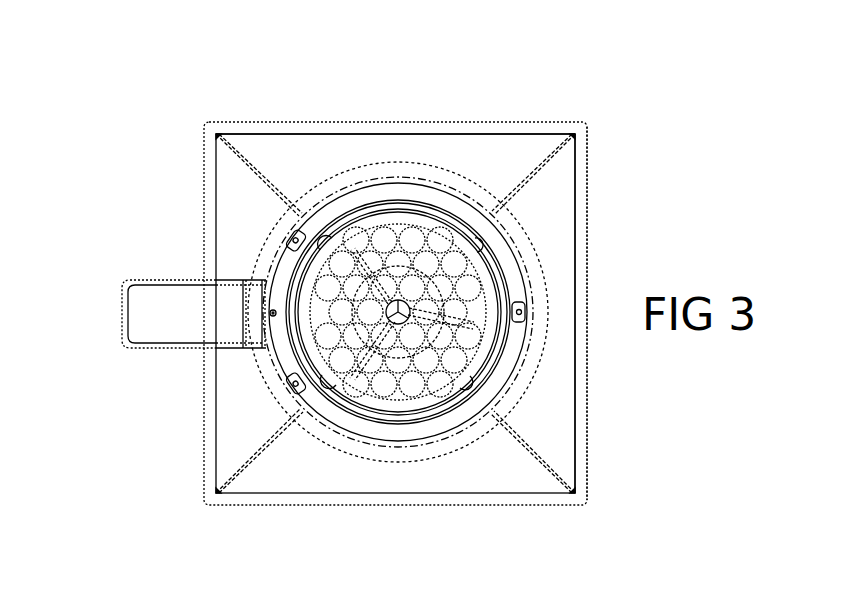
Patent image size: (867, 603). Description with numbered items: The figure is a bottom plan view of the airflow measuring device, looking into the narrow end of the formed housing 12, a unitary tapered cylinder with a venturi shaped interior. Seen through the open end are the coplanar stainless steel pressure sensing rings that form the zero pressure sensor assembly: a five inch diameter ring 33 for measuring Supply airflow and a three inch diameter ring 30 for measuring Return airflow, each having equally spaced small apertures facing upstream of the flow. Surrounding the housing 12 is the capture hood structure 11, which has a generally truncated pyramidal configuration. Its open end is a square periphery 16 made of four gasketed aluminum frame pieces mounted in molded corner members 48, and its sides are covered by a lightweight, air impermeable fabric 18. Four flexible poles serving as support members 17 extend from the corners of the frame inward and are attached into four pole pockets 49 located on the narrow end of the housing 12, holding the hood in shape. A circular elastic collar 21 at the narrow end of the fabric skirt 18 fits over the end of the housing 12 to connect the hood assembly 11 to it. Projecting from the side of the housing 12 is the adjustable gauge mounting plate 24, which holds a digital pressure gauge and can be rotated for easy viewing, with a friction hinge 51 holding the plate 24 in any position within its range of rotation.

The hood structure 11 is at (266, 117).
The formed housing 12 is at (401, 160).
The rectangular or square periphery 16 is at (584, 276).
The support members 17 is at (540, 175).
The fabric 18 is at (550, 207).
The elastic collar 21 is at (514, 386).
The gauge mounting plate 24 is at (160, 277).
The pressure sensing ring 30 is at (405, 275).
The pressure sensing ring 33 is at (385, 366).
The molded corner members 48 is at (576, 134).
The pole pockets 49 is at (327, 243).
The friction hinge 51 is at (270, 281).